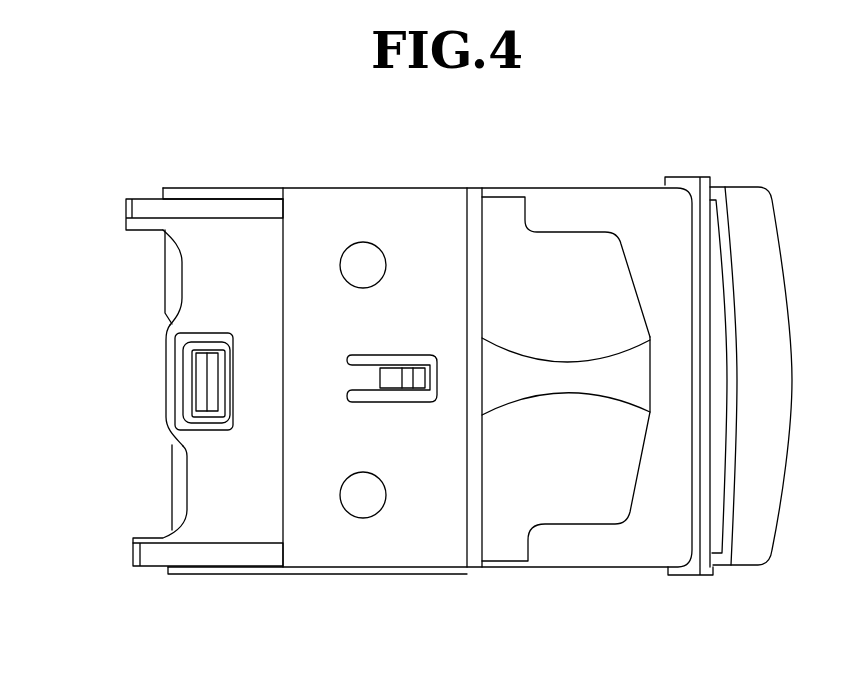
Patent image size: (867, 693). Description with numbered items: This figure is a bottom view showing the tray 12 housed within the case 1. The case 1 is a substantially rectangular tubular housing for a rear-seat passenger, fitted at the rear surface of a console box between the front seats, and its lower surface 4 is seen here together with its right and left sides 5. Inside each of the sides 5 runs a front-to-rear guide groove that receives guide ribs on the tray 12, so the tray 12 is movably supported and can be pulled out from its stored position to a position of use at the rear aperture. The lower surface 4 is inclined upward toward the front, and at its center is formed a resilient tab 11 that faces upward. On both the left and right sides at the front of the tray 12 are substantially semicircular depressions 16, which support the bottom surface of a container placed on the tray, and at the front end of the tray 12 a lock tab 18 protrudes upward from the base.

The case 1 is at (651, 155).
The lower surface 4 is at (408, 203).
The sides 5 is at (262, 189).
The resilient tab 11 is at (417, 381).
The tray 12 is at (206, 487).
The depressions 16 is at (567, 248).
The lock tab 18 is at (200, 383).